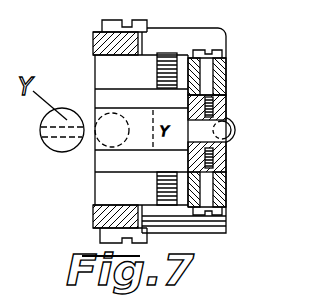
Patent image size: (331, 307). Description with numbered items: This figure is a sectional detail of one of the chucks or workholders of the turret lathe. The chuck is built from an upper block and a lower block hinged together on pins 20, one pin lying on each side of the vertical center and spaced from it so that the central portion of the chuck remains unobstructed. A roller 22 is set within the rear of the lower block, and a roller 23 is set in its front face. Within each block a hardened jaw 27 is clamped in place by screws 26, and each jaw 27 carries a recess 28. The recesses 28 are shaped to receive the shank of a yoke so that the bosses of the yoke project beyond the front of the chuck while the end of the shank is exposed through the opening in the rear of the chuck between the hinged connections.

The pins 20 is at (208, 73).
The roller 22 is at (233, 121).
The roller 23 is at (95, 110).
The screws 26 is at (170, 53).
The hardened jaw 27 is at (140, 188).
The recess 28 is at (100, 157).